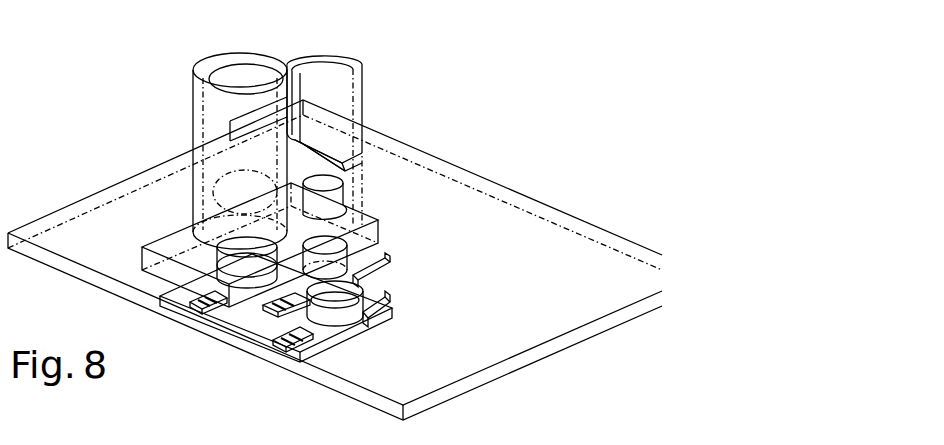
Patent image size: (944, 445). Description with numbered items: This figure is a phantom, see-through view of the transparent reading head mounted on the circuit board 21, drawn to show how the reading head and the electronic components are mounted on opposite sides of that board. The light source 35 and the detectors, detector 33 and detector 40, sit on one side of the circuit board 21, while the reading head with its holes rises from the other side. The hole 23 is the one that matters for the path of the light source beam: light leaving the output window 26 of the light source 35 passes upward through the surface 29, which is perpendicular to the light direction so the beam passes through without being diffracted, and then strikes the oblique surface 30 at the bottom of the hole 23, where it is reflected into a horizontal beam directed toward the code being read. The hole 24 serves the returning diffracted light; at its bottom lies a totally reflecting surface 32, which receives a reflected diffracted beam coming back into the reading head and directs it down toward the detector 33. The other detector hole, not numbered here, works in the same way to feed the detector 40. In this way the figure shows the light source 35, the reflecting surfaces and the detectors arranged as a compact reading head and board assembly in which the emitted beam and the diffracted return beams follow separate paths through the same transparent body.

The circuit board 21 is at (555, 248).
The hole 23 is at (316, 92).
The hole 24 is at (242, 82).
The output window 26 is at (322, 248).
The surface 29 is at (319, 186).
The oblique surface 30 is at (317, 147).
The totally reflecting surface 32 is at (246, 190).
The detector 33 is at (252, 315).
The light source 35 is at (365, 283).
The detector 40 is at (340, 347).